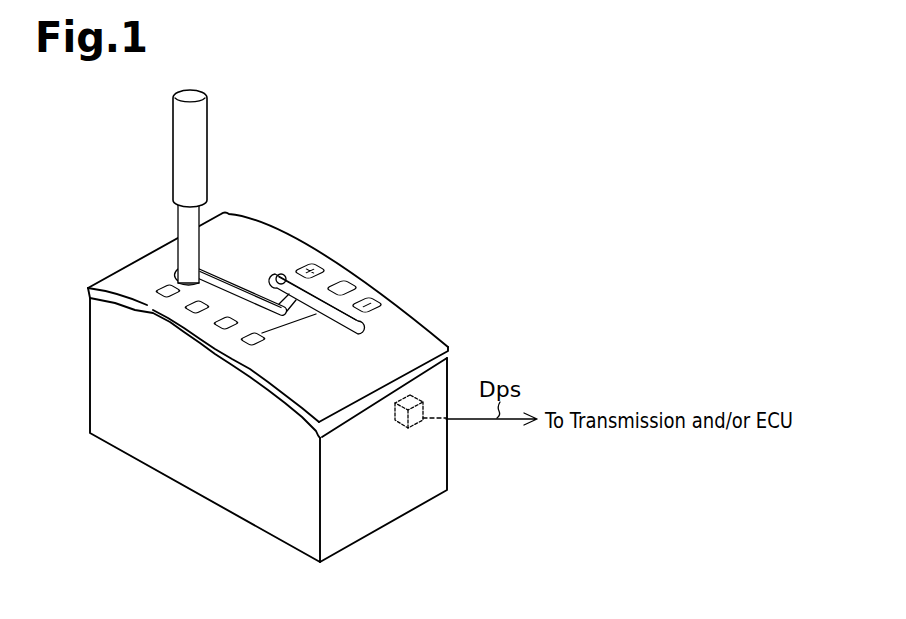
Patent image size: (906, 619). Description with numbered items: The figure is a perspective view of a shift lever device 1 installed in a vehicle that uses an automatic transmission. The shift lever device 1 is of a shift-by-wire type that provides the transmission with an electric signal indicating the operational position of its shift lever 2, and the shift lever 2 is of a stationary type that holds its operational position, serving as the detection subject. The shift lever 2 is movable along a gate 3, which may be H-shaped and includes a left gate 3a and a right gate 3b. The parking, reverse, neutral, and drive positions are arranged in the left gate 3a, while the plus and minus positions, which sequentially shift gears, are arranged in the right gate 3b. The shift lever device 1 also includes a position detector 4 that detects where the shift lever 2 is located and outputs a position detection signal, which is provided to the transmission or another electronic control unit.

The shift lever device 1 is at (263, 221).
The shift lever 2 is at (207, 118).
The gate 3 is at (270, 274).
The left gate 3a is at (224, 283).
The right gate 3b is at (302, 290).
The position detector 4 is at (402, 430).